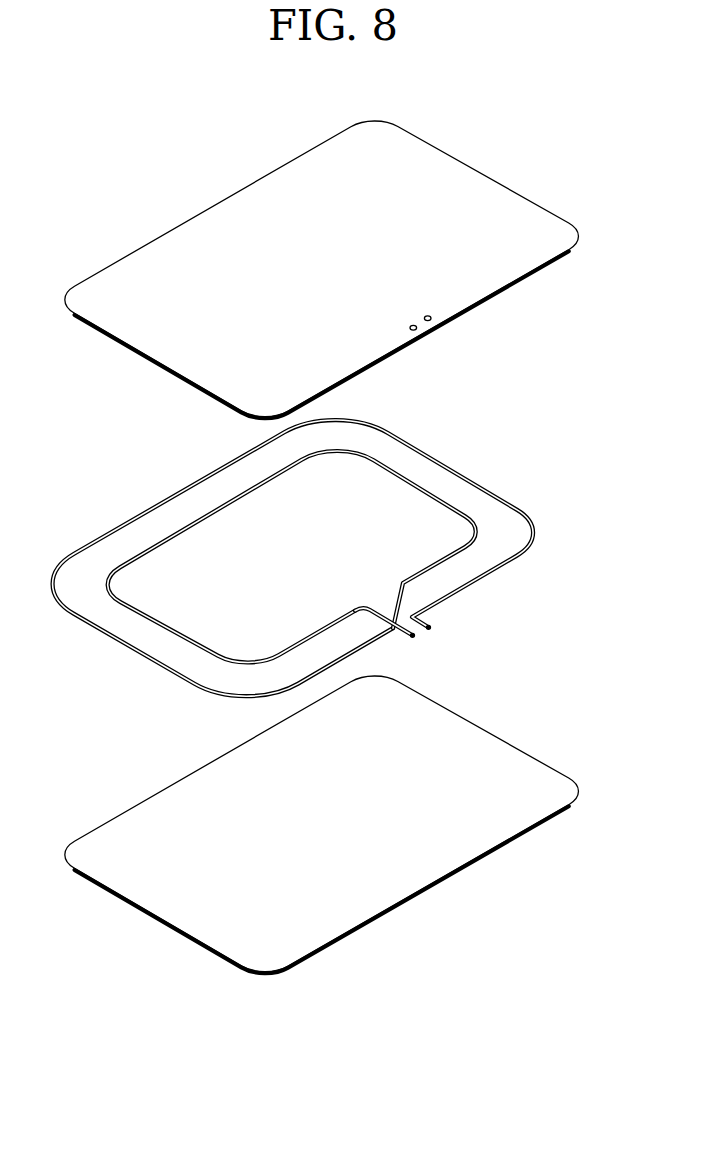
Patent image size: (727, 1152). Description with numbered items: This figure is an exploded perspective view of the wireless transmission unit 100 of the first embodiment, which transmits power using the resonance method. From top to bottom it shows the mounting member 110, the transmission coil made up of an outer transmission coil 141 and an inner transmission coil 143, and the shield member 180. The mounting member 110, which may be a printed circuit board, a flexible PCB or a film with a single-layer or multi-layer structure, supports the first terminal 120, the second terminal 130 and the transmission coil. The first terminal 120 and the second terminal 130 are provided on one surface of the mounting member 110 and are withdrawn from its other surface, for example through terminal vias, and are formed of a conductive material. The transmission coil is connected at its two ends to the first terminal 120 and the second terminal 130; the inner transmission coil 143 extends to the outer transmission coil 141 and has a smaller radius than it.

The wireless transmission unit 100 is at (88, 121).
The mounting member 110 is at (518, 210).
The first terminal 120 is at (430, 315).
The second terminal 130 is at (414, 331).
The outer transmission coil 141 is at (502, 493).
The inner transmission coil 143 is at (392, 472).
The shield member 180 is at (517, 777).